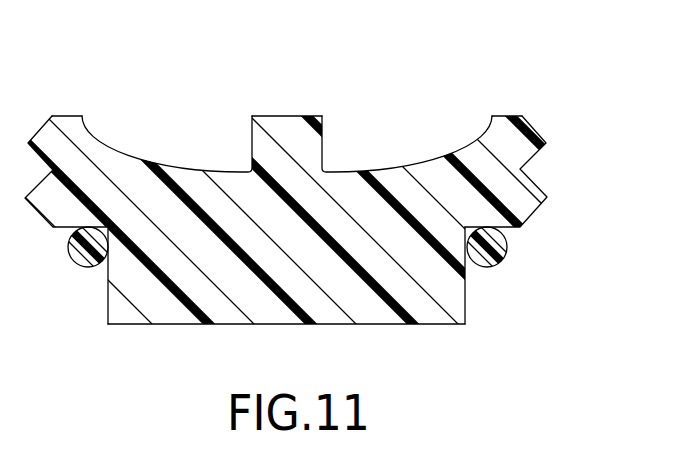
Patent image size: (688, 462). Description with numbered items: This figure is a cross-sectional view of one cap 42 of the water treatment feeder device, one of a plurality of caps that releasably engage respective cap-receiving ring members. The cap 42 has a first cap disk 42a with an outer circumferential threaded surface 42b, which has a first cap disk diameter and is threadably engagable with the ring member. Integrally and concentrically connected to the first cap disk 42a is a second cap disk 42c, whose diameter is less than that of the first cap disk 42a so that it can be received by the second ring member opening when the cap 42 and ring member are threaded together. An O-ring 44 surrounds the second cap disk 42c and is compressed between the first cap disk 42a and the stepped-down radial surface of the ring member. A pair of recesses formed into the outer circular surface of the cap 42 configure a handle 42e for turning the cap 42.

The cap 42 is at (267, 116).
The first cap disk 42a is at (497, 116).
The outer circumferential threaded surface 42b is at (537, 155).
The second cap disk 42c is at (138, 324).
The handle 42e is at (288, 116).
The O-ring 44 is at (498, 263).